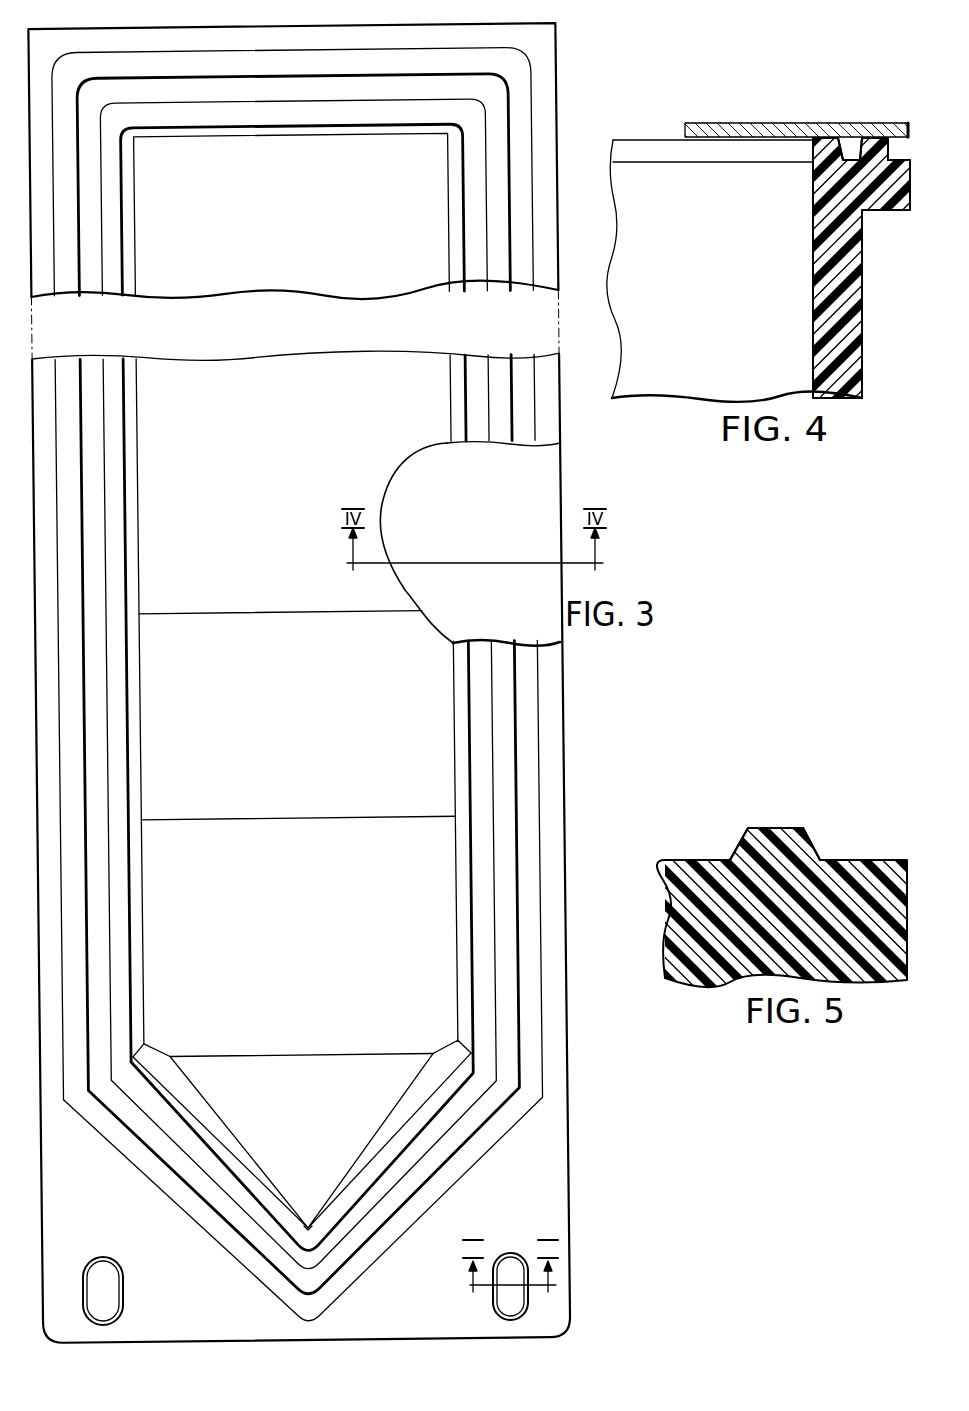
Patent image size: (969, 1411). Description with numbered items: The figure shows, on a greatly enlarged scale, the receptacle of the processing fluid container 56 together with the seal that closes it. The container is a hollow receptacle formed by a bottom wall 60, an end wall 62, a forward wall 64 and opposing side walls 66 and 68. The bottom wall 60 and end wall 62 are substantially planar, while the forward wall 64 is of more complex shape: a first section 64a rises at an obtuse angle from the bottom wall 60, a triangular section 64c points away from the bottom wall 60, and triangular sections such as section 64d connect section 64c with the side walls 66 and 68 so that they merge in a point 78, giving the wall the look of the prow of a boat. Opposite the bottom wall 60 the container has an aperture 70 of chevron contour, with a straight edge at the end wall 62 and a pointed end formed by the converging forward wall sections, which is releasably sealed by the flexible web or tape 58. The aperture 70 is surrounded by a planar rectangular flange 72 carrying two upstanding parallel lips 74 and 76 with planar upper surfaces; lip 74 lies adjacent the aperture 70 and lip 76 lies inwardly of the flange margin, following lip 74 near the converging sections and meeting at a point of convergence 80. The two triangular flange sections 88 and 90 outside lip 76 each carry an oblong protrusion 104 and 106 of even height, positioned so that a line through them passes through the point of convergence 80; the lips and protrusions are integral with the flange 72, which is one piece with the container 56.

In FIG. 3, the container 56 is at (561, 106).
In FIG. 3, the tape 58 is at (452, 523).
In FIG. 4, the tape 58 is at (773, 123).
In FIG. 3, the bottom wall 60 is at (282, 448).
In FIG. 3, the end wall 62 is at (293, 136).
In FIG. 4, the end wall 62 is at (690, 274).
In FIG. 3, the forward wall 64 is at (320, 1056).
In FIG. 3, the first section 64a is at (402, 1117).
In FIG. 3, the section 64c is at (281, 1119).
In FIG. 3, the section 64d is at (200, 1110).
In FIG. 3, the side wall 66 is at (133, 683).
In FIG. 3, the side wall 68 is at (455, 678).
In FIG. 4, the side wall 68 is at (855, 278).
In FIG. 3, the aperture 70 is at (433, 752).
In FIG. 3, the flange 72 is at (538, 40).
In FIG. 4, the flange 72 is at (893, 178).
In FIG. 5, the flange 72 is at (897, 885).
In FIG. 3, the lip 74 is at (470, 878).
In FIG. 4, the lip 74 is at (840, 138).
In FIG. 3, the lip 76 is at (517, 890).
In FIG. 4, the lip 76 is at (873, 140).
In FIG. 3, the point 78 is at (308, 1226).
In FIG. 3, the point of convergence 80 is at (305, 1305).
In FIG. 3, the triangular section 88 is at (93, 1221).
In FIG. 3, the triangular section 90 is at (497, 1199).
In FIG. 3, the protrusion 104 is at (105, 1290).
In FIG. 3, the protrusion 106 is at (516, 1295).
In FIG. 5, the protrusion 106 is at (795, 845).